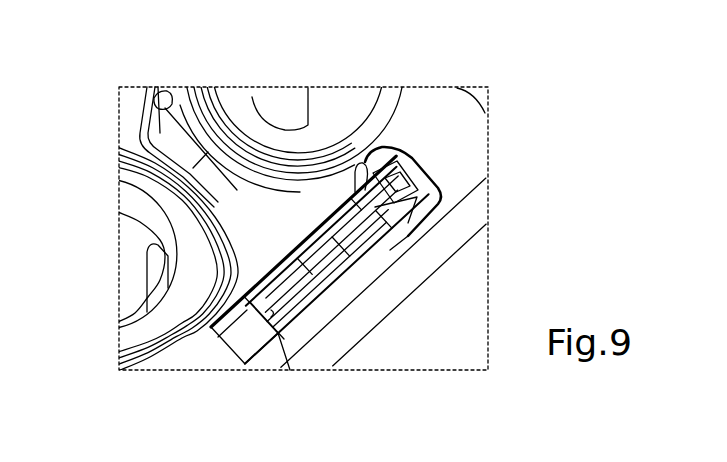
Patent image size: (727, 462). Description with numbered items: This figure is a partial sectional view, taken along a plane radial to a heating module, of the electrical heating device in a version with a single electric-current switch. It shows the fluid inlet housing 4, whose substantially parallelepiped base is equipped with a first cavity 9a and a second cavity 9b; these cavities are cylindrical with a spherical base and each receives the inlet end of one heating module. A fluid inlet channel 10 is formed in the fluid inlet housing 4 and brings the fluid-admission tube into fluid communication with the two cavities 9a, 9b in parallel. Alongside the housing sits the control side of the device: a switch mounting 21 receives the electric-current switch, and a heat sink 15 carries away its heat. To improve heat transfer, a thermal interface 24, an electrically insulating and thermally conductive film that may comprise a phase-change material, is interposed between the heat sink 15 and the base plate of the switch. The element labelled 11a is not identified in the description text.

The fluid inlet housing 4 is at (470, 147).
The first cavity 9a is at (284, 107).
The second cavity 9b is at (138, 278).
The fluid inlet channel 10 is at (628, 0).
The latch 11a is at (347, 225).
The heat sink 15 is at (154, 96).
The switch mounting 21 is at (360, 268).
The thermal interface 24 is at (337, 203).